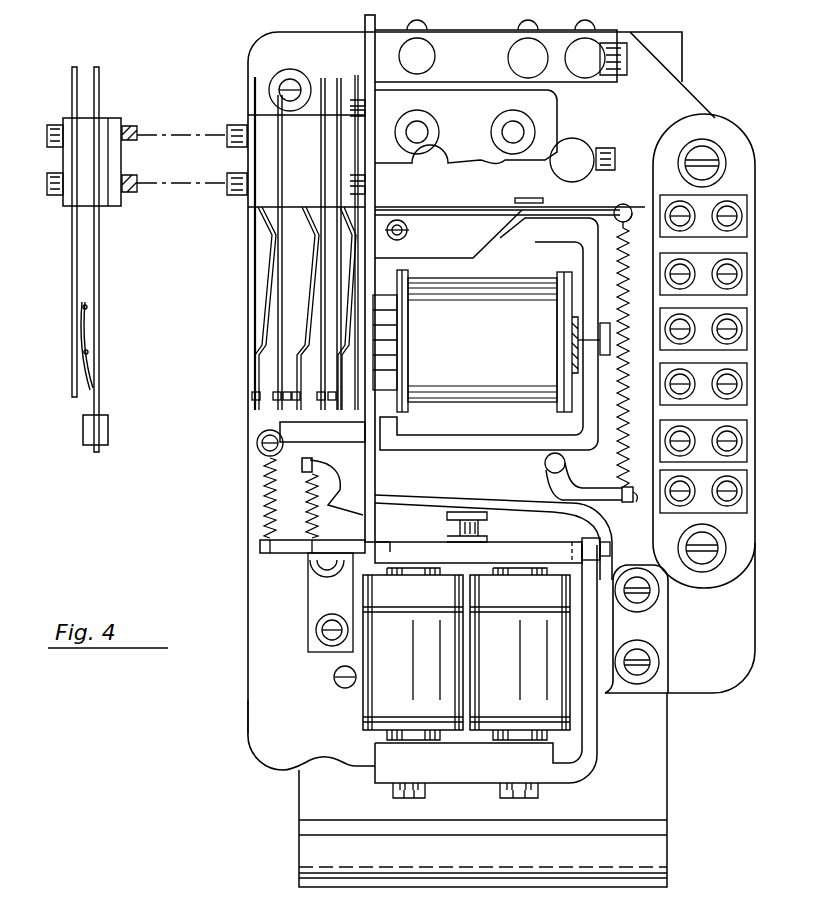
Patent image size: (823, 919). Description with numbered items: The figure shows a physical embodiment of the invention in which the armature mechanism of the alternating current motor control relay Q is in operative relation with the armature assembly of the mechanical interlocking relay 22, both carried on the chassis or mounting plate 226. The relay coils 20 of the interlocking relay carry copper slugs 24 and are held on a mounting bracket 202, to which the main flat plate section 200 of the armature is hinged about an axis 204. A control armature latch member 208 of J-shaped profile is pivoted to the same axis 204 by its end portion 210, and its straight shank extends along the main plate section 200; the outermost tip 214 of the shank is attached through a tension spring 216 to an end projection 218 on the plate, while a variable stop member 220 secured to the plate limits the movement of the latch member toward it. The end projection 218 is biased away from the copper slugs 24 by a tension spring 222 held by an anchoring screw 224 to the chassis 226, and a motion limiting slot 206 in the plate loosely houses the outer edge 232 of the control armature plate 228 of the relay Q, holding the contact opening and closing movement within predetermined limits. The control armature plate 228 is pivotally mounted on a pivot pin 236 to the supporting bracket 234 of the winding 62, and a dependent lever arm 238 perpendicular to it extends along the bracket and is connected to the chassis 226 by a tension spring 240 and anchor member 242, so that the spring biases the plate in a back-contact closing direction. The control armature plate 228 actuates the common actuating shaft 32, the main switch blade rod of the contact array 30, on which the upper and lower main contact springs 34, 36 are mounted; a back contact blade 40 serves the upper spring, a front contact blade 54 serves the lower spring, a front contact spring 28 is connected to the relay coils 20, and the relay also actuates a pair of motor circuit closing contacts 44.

The relay coils 20 is at (428, 660).
The mechanical interlocking relay 22 is at (326, 710).
The copper slugs 24 is at (428, 603).
The front contact spring 28 is at (300, 378).
The contact array 30 is at (195, 111).
The common actuating shaft 32 is at (322, 432).
The upper main contact spring 34 is at (262, 118).
The lower main contact spring 36 is at (323, 78).
The back contact blade 40 is at (255, 252).
The motor circuit closing contacts 44 is at (72, 378).
The front contact blade 54 is at (339, 78).
The winding 62 is at (500, 360).
The main flat plate section 200 is at (542, 550).
The mounting bracket 202 is at (598, 752).
The hinge axis 204 is at (588, 540).
The motion limiting slot 206 is at (386, 550).
The control armature latch member 208 is at (474, 500).
The end portion 210 is at (680, 403).
The outermost tip 214 is at (313, 462).
The tension spring 216 is at (296, 506).
The end projection 218 is at (295, 555).
The variable stop member 220 is at (487, 522).
The tension spring 222 is at (266, 522).
The anchoring screw 224 is at (257, 440).
The chassis 226 is at (252, 762).
The control armature plate 228 is at (378, 468).
The outer edge 232 is at (365, 525).
The supporting bracket 234 is at (630, 199).
The pivot pin 236 is at (410, 232).
The dependent lever arm 238 is at (580, 210).
The tension spring 240 is at (622, 462).
The anchor member 242 is at (632, 502).
The alternating current motor control relay Q is at (644, 251).